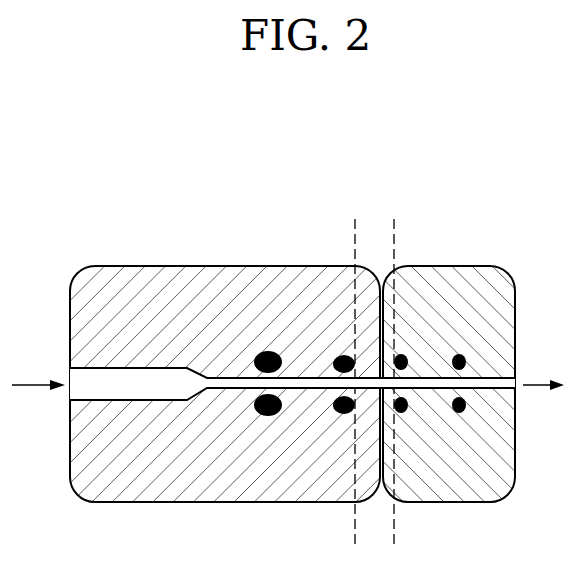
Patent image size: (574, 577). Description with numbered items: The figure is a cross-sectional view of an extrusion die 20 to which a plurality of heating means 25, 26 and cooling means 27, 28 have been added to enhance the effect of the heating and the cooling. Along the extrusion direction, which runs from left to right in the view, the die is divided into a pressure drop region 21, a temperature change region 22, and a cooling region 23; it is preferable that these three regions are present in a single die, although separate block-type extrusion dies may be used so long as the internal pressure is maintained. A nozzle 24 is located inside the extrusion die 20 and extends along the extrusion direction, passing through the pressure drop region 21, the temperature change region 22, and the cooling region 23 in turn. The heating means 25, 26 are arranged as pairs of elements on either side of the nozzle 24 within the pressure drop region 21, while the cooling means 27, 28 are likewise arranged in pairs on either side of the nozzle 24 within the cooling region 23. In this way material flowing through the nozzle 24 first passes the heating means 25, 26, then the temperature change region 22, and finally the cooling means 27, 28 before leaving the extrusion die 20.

The extrusion die 20 is at (309, 161).
The pressure drop region 21 is at (355, 223).
The temperature change region 22 is at (394, 223).
The cooling region 23 is at (515, 223).
The nozzle 24 is at (196, 401).
The heating means 25 is at (273, 414).
The heating means 26 is at (345, 413).
The cooling means 27 is at (403, 412).
The cooling means 28 is at (461, 412).